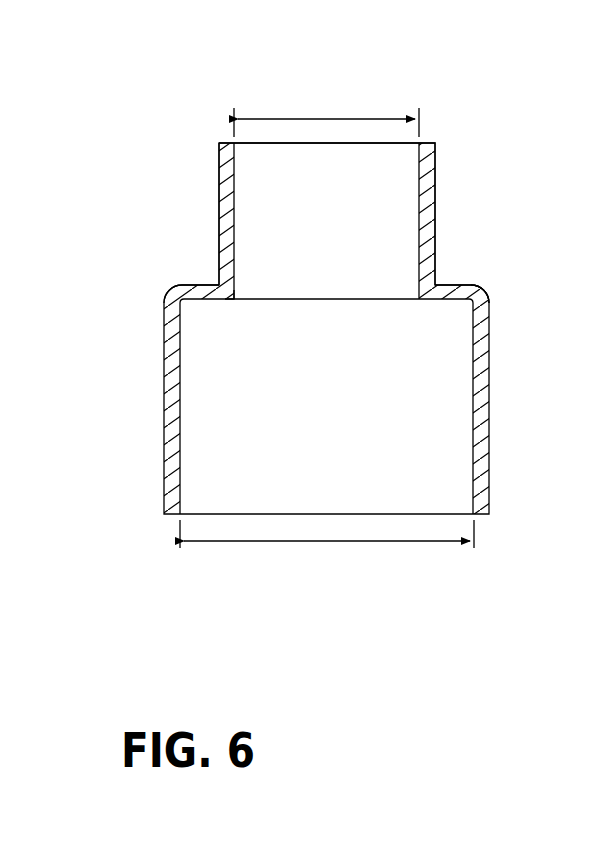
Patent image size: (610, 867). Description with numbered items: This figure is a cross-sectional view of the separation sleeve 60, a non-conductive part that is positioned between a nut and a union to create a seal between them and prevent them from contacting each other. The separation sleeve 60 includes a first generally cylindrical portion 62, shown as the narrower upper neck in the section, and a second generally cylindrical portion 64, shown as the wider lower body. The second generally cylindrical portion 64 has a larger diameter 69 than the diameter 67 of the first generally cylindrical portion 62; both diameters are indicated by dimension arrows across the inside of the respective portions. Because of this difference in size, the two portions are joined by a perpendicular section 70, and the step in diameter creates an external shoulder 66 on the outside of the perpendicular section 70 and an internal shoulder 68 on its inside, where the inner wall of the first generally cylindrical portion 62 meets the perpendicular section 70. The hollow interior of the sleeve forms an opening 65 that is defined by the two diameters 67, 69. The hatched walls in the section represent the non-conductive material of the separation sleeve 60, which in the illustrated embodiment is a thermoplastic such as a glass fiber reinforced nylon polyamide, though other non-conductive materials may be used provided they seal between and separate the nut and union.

The separation sleeve 60 is at (150, 367).
The first generally cylindrical portion 62 is at (435, 214).
The second generally cylindrical portion 64 is at (489, 443).
The opening 65 is at (342, 217).
The external shoulder 66 is at (460, 283).
The diameter 67 is at (322, 113).
The internal shoulder 68 is at (232, 295).
The diameter 69 is at (322, 545).
The perpendicular section 70 is at (480, 296).